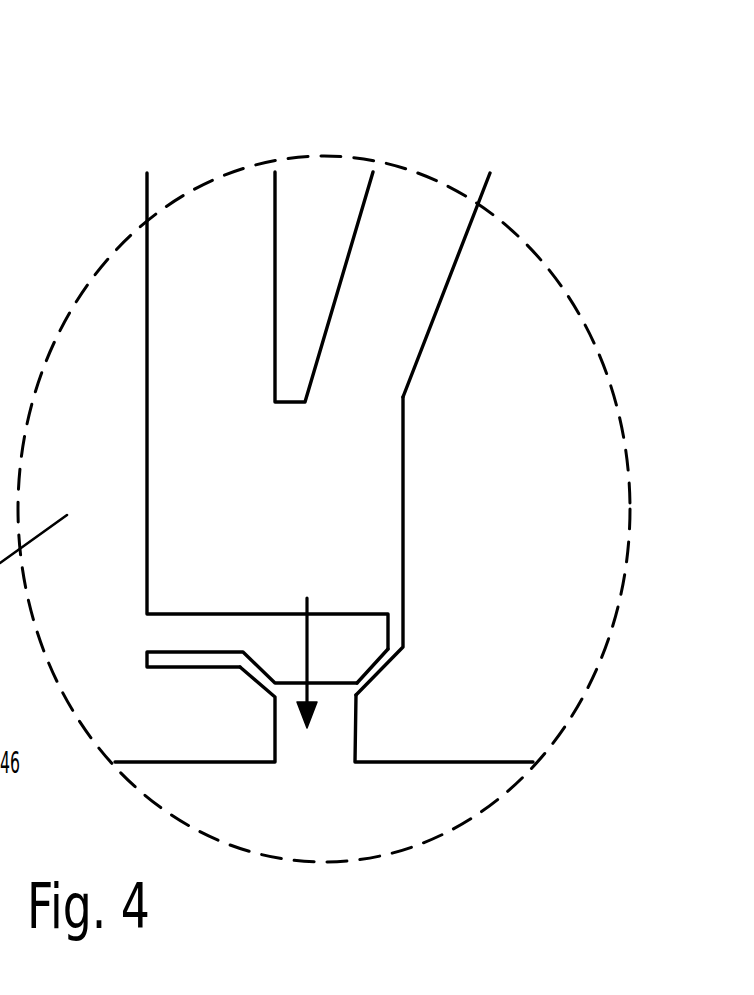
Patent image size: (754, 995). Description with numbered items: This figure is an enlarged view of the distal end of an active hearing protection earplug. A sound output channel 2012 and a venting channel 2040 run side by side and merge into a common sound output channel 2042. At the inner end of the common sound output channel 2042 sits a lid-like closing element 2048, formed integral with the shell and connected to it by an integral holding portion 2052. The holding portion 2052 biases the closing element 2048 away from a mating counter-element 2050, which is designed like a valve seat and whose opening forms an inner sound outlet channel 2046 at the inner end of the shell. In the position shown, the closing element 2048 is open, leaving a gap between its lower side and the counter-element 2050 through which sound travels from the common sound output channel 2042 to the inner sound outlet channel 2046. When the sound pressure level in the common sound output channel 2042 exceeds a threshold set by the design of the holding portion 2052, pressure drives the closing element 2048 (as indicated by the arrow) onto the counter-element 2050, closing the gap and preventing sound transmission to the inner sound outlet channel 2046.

The sound output channel 2012 is at (210, 245).
The venting channel 2040 is at (392, 258).
The common sound output channel 2042 is at (330, 537).
The holding portion 2052 is at (193, 637).
The closing element 2048 is at (345, 650).
The counter-element 2050 is at (363, 686).
The inner sound outlet channel 2046 is at (330, 747).